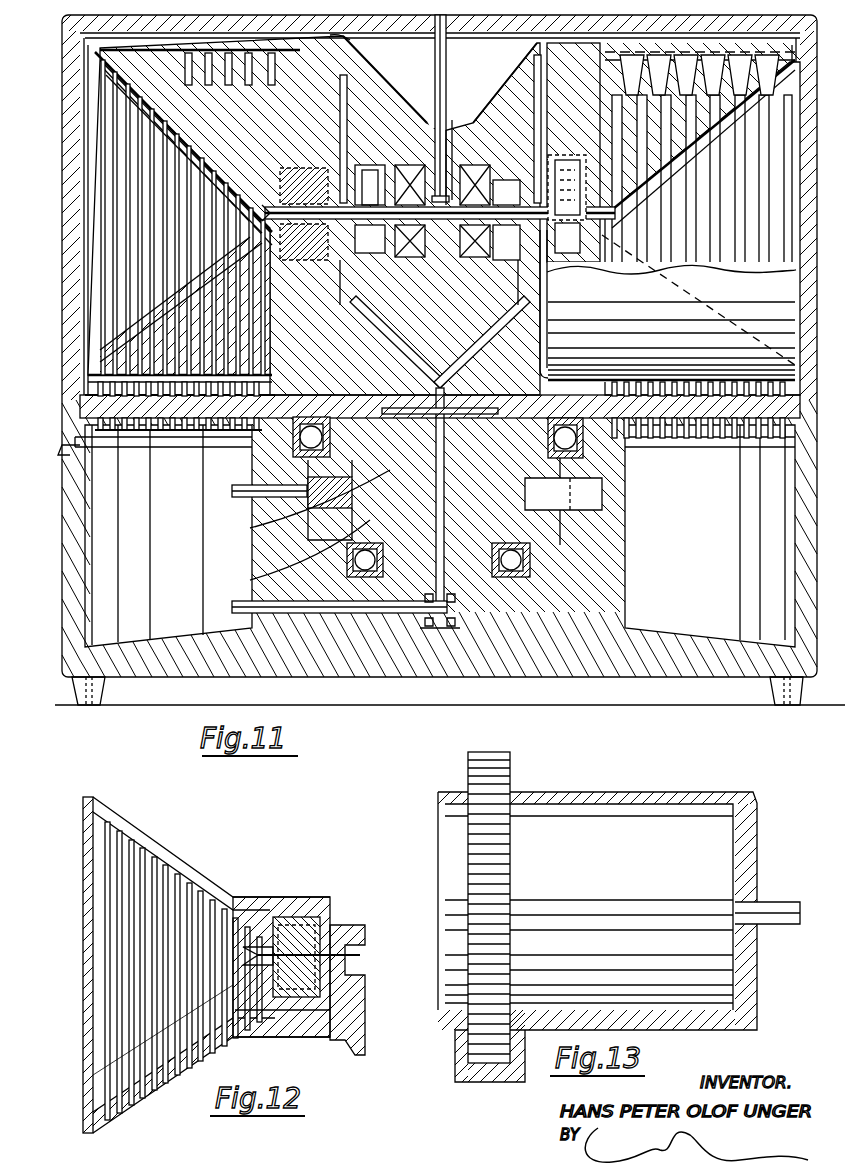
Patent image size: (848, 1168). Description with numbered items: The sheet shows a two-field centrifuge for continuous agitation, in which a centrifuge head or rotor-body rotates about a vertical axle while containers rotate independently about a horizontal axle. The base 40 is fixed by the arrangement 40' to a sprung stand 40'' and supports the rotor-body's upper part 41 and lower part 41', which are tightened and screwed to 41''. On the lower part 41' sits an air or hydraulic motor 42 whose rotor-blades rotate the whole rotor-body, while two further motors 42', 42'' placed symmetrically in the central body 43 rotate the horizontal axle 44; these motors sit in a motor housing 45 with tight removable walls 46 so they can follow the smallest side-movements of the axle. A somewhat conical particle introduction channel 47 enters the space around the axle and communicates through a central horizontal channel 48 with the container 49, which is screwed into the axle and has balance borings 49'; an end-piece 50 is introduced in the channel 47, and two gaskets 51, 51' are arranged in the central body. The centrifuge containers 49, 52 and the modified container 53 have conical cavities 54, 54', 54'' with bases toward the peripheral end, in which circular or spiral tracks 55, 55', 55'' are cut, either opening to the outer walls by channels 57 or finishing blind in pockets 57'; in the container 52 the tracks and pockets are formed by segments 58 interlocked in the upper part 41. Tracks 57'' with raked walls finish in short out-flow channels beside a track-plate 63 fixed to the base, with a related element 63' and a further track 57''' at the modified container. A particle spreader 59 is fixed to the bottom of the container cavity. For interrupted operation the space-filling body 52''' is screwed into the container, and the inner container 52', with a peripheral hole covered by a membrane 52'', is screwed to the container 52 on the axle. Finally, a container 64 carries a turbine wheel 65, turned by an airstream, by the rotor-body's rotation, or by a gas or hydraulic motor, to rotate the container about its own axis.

In FIG. 11, the base 40 is at (450, 360).
In FIG. 11, the arrangement 40' is at (101, 691).
In FIG. 11, the sprung stand 40'' is at (465, 691).
In FIG. 11, the rotor-body upper part 41 is at (413, 497).
In FIG. 11, the rotor-body lower part 41' is at (306, 502).
In FIG. 11, the tightening and screwing element 41'' is at (296, 551).
In FIG. 11, the air or hydraulic motor 42 is at (341, 552).
In FIG. 11, the air or hydraulic motor 42' is at (386, 139).
In FIG. 11, the air or hydraulic motor 42'' is at (523, 129).
In FIG. 11, the central body 43 is at (350, 324).
In FIG. 11, the horizontal axle 44 is at (372, 165).
In FIG. 11, the motor housing 45 is at (380, 170).
In FIG. 11, the removable walls 46 is at (452, 118).
In FIG. 11, the particle introduction channel 47 is at (448, 125).
In FIG. 11, the central horizontal channel 48 is at (500, 205).
In FIG. 12, the central horizontal channel 48 is at (340, 925).
In FIG. 11, the container 49 is at (357, 43).
In FIG. 11, the balance borings 49' is at (237, 85).
In FIG. 11, the end-piece 50 is at (446, 75).
In FIG. 11, the gasket 51 is at (429, 282).
In FIG. 11, the gasket 51' is at (451, 154).
In FIG. 11, the centrifuge container 52 is at (585, 93).
In FIG. 11, the inner container 52' is at (567, 168).
In FIG. 11, the covering membrane 52'' is at (498, 152).
In FIG. 12, the space-filling body 52''' is at (303, 988).
In FIG. 12, the centrifuge container 53 is at (272, 1010).
In FIG. 11, the conical cavity 54 is at (180, 217).
In FIG. 11, the conical cavity 54' is at (700, 219).
In FIG. 12, the conical cavity 54'' is at (192, 965).
In FIG. 11, the tracks 55 is at (184, 154).
In FIG. 11, the tracks 55' is at (703, 149).
In FIG. 12, the tracks 55'' is at (158, 971).
In FIG. 11, the channels 57 is at (201, 293).
In FIG. 11, the pockets 57' is at (699, 117).
In FIG. 11, the tracks 57'' is at (204, 302).
In FIG. 12, the plate 57''' is at (272, 1041).
In FIG. 11, the segments 58 is at (640, 110).
In FIG. 12, the particle spreader 59 is at (150, 1036).
In FIG. 11, the track-plate 63 is at (440, 431).
In FIG. 11, the plate 63' is at (62, 446).
In FIG. 13, the container 64 is at (562, 855).
In FIG. 13, the turbine wheel 65 is at (493, 795).